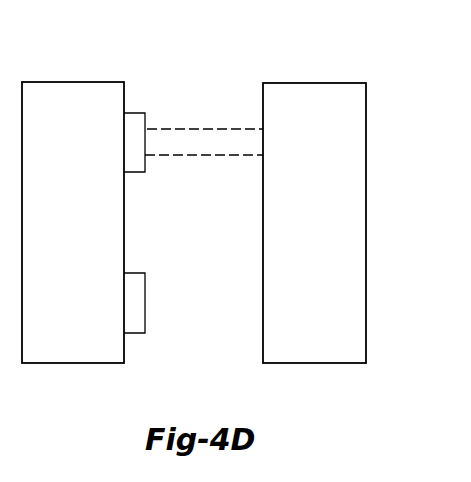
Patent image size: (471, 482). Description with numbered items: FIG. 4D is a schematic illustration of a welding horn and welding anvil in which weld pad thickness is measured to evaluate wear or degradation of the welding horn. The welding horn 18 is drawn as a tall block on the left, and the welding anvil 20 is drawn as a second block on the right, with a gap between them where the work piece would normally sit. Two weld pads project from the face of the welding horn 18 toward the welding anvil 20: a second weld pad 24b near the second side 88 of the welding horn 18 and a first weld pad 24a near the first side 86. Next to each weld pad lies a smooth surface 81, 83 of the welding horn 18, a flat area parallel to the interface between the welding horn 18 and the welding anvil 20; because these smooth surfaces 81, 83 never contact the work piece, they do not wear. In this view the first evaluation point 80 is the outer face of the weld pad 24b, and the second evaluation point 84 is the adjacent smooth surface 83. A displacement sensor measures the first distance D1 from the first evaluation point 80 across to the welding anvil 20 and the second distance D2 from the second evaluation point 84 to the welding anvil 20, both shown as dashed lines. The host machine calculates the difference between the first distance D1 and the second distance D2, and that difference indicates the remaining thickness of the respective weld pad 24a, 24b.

The welding horn 18 is at (79, 223).
The welding anvil 20 is at (318, 223).
The first weld pad 24a is at (133, 305).
The second weld pad 24b is at (132, 167).
The first evaluation point 80 is at (148, 162).
The smooth surface 81 is at (112, 303).
The smooth surface 83 is at (114, 165).
The second evaluation point 84 is at (124, 128).
The first side 86 is at (69, 372).
The second side 88 is at (70, 76).
The first distance D1 is at (203, 156).
The second distance D2 is at (183, 129).